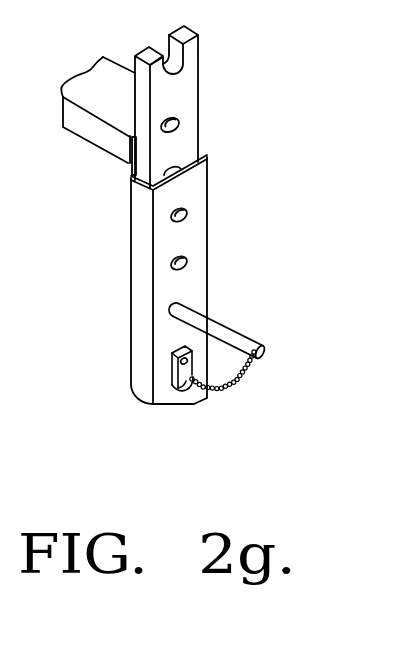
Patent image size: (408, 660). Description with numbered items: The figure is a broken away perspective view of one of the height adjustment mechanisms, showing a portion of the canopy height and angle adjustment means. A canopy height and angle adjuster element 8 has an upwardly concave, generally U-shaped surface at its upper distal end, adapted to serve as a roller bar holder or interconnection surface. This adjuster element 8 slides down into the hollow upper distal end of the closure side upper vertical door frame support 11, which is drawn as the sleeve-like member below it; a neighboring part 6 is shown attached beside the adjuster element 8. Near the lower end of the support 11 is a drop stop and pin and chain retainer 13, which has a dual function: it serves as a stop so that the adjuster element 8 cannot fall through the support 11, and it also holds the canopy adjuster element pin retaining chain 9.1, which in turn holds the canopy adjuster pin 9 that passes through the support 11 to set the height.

The mounting block 6 is at (87, 133).
The canopy height and angle adjuster element 8 is at (198, 87).
The closure side upper vertical door frame support 11 is at (208, 193).
The canopy adjuster pin 9 is at (212, 323).
The canopy adjuster element pin retaining chain 9.1 is at (233, 383).
The drop stop and pin and chain retainer 13 is at (170, 388).